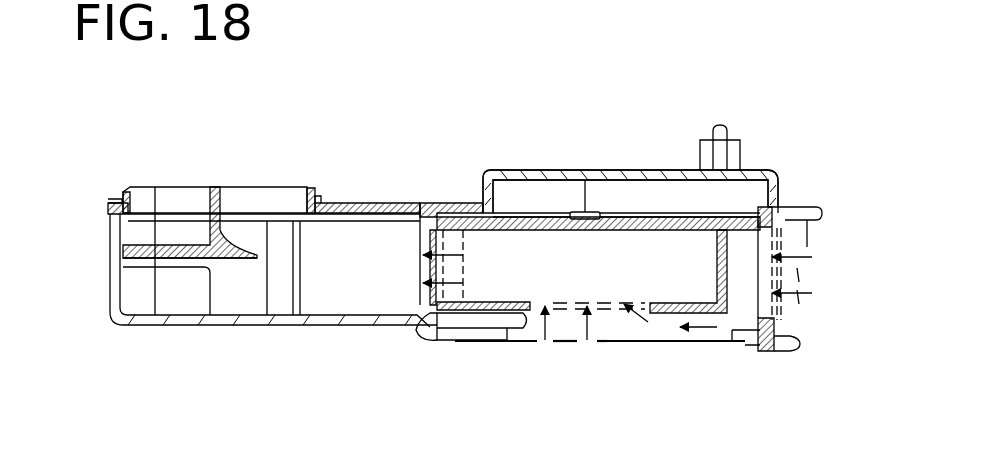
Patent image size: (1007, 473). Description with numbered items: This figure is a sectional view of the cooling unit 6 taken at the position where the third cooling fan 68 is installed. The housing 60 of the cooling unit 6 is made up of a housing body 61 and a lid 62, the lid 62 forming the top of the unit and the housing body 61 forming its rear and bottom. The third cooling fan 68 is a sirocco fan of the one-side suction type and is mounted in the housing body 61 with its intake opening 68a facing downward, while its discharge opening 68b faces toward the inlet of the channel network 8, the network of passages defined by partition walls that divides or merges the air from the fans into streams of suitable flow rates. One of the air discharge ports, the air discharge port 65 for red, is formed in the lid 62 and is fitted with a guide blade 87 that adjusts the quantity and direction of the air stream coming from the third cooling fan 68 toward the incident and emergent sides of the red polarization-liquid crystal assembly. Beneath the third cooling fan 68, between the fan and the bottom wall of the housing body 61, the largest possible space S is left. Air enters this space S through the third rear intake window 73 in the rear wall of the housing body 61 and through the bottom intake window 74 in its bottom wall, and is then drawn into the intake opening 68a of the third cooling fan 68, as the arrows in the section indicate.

The cooling unit 6 is at (646, 120).
The channel network 8 is at (249, 296).
The housing 60 is at (763, 172).
The housing body 61 is at (358, 322).
The lid 62 is at (545, 172).
The air discharge port 65 is at (260, 197).
The third cooling fan 68 is at (500, 282).
The intake opening 68a is at (527, 310).
The discharge opening 68b is at (438, 311).
The third rear intake window 73 is at (764, 311).
The bottom intake window 74 is at (593, 345).
The guide blade 87 is at (223, 197).
The space S is at (621, 328).